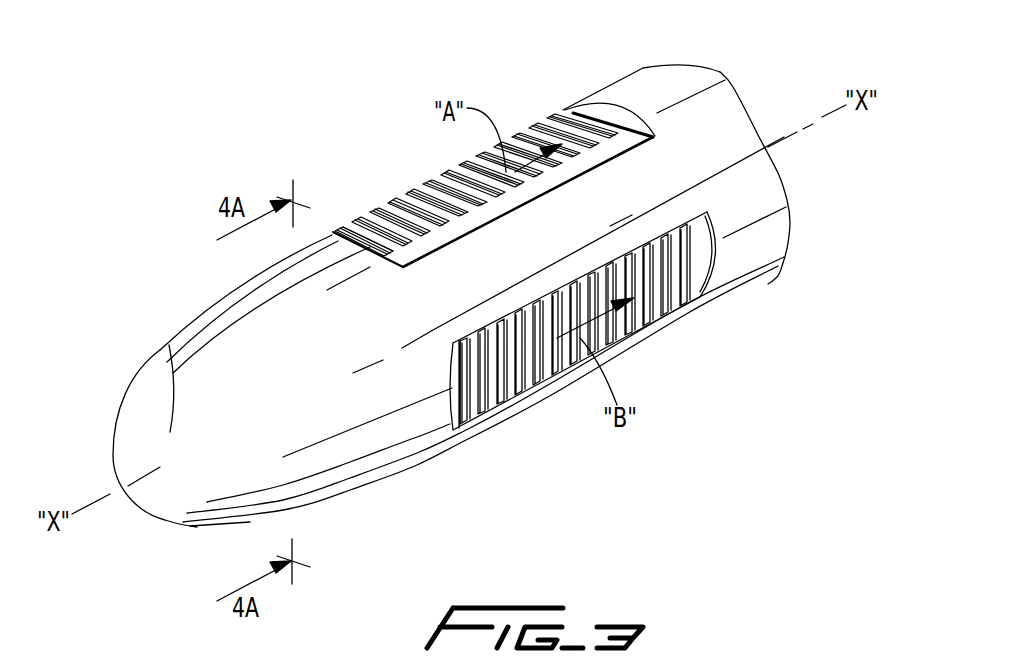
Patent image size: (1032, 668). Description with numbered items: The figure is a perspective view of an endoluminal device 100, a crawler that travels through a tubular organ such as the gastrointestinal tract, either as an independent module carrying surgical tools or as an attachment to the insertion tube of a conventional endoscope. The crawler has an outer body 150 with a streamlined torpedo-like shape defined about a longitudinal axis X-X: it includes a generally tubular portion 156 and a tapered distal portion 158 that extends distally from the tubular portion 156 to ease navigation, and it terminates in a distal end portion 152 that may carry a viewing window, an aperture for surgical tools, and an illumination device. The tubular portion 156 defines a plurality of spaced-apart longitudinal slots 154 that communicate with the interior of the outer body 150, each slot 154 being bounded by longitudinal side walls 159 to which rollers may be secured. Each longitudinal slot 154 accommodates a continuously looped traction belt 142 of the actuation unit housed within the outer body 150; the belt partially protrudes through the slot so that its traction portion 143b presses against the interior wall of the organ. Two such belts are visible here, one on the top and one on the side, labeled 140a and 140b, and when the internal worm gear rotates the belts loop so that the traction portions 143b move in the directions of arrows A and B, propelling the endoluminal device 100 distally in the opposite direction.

The endoluminal device 100 is at (742, 62).
The first vent grille 140a is at (566, 105).
The second vent grille 140b is at (541, 380).
The traction belt 142 is at (517, 128).
The traction portion 143b is at (407, 200).
The outer body 150 is at (748, 215).
The distal end portion 152 is at (176, 488).
The longitudinal slot 154 is at (606, 110).
The tubular portion 156 is at (344, 228).
The tapered distal portion 158 is at (173, 370).
The longitudinal side wall 159 is at (613, 225).